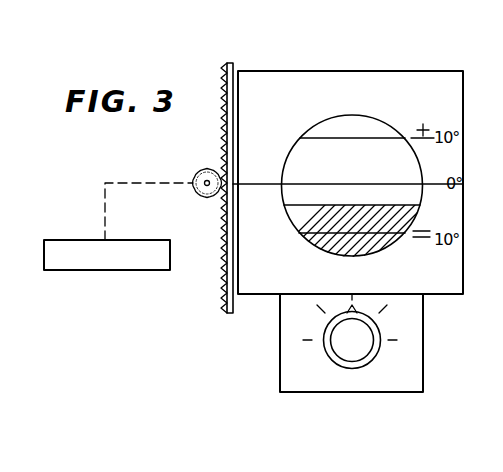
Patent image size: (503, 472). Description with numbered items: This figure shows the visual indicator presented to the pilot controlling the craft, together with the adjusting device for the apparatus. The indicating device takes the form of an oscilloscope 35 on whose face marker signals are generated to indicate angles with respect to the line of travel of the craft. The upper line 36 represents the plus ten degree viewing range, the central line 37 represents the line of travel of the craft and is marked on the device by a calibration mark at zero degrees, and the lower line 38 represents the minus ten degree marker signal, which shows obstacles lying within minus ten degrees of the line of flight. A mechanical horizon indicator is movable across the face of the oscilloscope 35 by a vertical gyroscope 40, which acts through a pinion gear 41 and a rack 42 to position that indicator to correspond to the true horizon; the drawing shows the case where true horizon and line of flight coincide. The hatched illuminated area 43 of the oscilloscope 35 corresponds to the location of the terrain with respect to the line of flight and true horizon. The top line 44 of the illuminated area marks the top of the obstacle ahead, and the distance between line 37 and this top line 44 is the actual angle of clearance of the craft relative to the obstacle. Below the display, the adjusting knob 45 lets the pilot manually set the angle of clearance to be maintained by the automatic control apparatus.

The oscilloscope 35 is at (363, 115).
The plus ten degree line 36 is at (316, 133).
The line of travel line 37 is at (297, 185).
The minus ten degree line 38 is at (317, 241).
The vertical gyroscope 40 is at (76, 240).
The pinion gear 41 is at (208, 198).
The rack 42 is at (220, 286).
The illuminated area 43 is at (389, 233).
The top line of the illuminated area 44 is at (397, 205).
The adjusting knob 45 is at (376, 330).